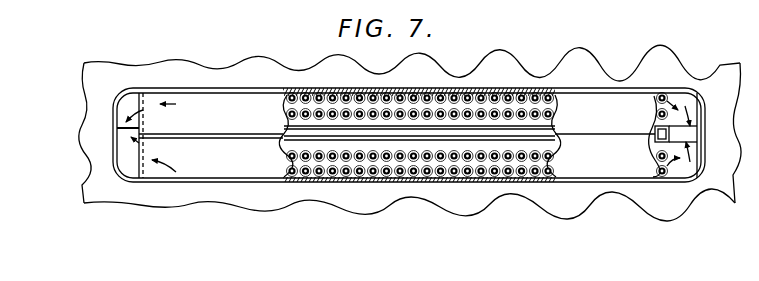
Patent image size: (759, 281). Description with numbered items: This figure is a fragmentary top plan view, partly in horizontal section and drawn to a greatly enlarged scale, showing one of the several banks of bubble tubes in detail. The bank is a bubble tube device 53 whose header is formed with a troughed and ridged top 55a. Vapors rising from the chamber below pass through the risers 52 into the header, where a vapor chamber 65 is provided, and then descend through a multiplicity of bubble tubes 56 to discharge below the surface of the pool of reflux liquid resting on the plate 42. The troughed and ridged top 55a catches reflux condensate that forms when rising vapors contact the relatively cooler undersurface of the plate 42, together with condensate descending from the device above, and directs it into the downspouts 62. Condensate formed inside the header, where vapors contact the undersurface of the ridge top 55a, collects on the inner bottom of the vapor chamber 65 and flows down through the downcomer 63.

The plate 42 is at (95, 192).
The bubble tube device 53 is at (156, 88).
The downspout 62 is at (157, 152).
The troughed and ridged top 55a is at (223, 120).
The riser 52 is at (367, 133).
The vapor chamber 65 is at (468, 165).
The bubble tube 56 is at (489, 88).
The downcomer 63 is at (683, 130).